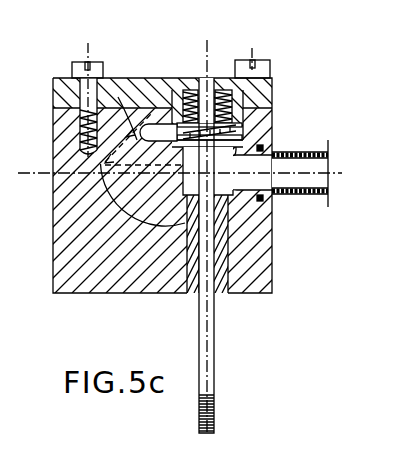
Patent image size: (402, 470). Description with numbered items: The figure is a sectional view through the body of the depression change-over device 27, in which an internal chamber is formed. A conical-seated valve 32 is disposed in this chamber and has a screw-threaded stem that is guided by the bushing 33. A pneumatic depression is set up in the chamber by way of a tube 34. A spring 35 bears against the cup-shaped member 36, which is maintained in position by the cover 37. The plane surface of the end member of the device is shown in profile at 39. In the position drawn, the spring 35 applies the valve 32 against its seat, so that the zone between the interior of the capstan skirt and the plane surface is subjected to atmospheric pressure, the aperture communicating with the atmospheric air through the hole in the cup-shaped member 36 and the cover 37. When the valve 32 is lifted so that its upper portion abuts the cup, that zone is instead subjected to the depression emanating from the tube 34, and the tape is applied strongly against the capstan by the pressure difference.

The depression change-over device 27 is at (73, 294).
The conical-seated valve 32 is at (215, 313).
The bushing 33 is at (194, 285).
The tube 34 is at (297, 152).
The spring 35 is at (185, 75).
The cup-shaped member 36 is at (228, 78).
The cover 37 is at (140, 76).
The profile of the plane surface 39 is at (132, 76).